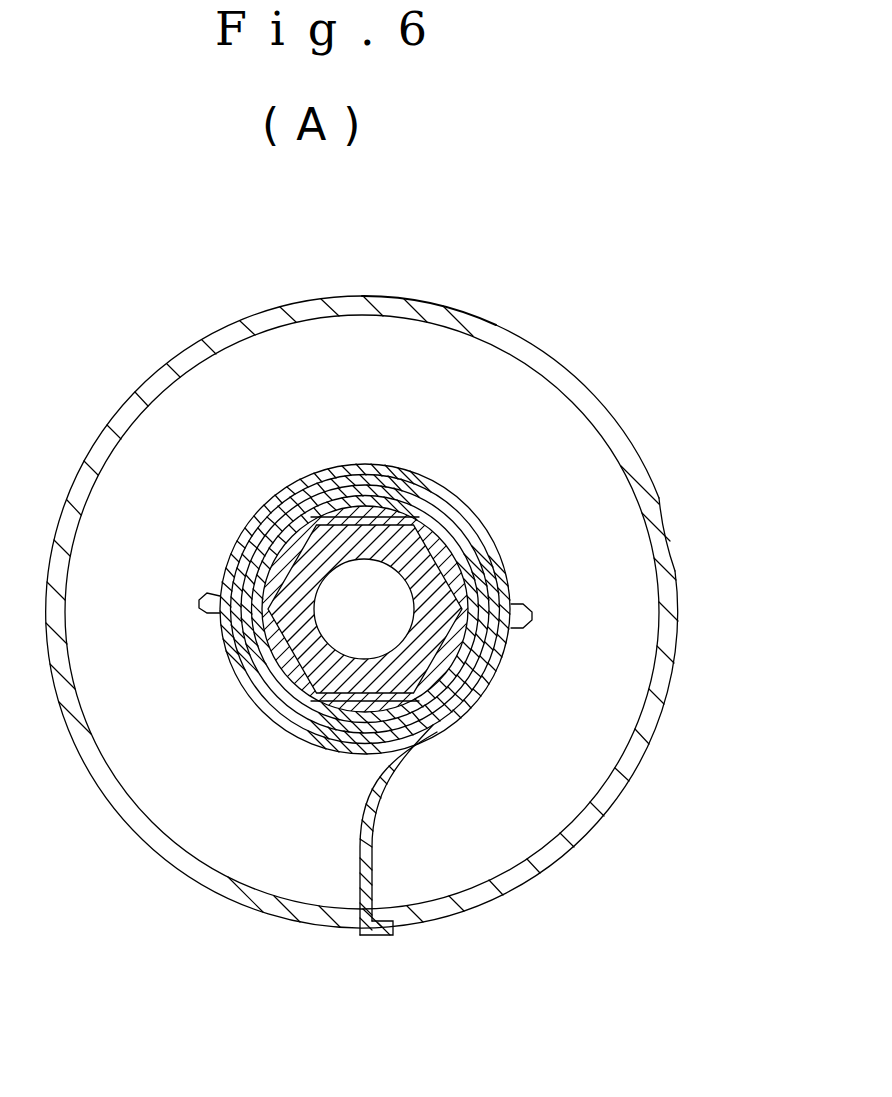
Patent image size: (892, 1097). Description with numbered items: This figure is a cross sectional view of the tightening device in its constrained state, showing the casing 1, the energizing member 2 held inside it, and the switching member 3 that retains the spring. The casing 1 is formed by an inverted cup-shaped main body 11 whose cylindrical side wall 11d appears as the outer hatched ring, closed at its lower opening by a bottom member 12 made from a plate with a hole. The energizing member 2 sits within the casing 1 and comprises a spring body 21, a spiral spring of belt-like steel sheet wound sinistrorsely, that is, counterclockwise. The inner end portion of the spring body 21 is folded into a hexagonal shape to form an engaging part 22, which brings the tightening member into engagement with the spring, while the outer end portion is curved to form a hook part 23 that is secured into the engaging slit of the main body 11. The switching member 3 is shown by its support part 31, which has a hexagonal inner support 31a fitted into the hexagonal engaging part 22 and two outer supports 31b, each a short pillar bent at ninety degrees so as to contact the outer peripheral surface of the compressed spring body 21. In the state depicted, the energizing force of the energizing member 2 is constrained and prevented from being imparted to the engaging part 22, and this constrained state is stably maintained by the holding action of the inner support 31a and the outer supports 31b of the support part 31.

The casing 1 is at (393, 591).
The main body 11 is at (580, 372).
The cylindrical side wall 11d is at (673, 540).
The bottom member 12 is at (490, 398).
The energizing member 2 is at (362, 705).
The spring body 21 is at (270, 705).
The engaging part 22 is at (285, 560).
The hook part 23 is at (393, 932).
The switching member 3 is at (362, 634).
The support part 31 is at (330, 682).
The inner support 31a is at (403, 556).
The outer support 31b is at (205, 614).